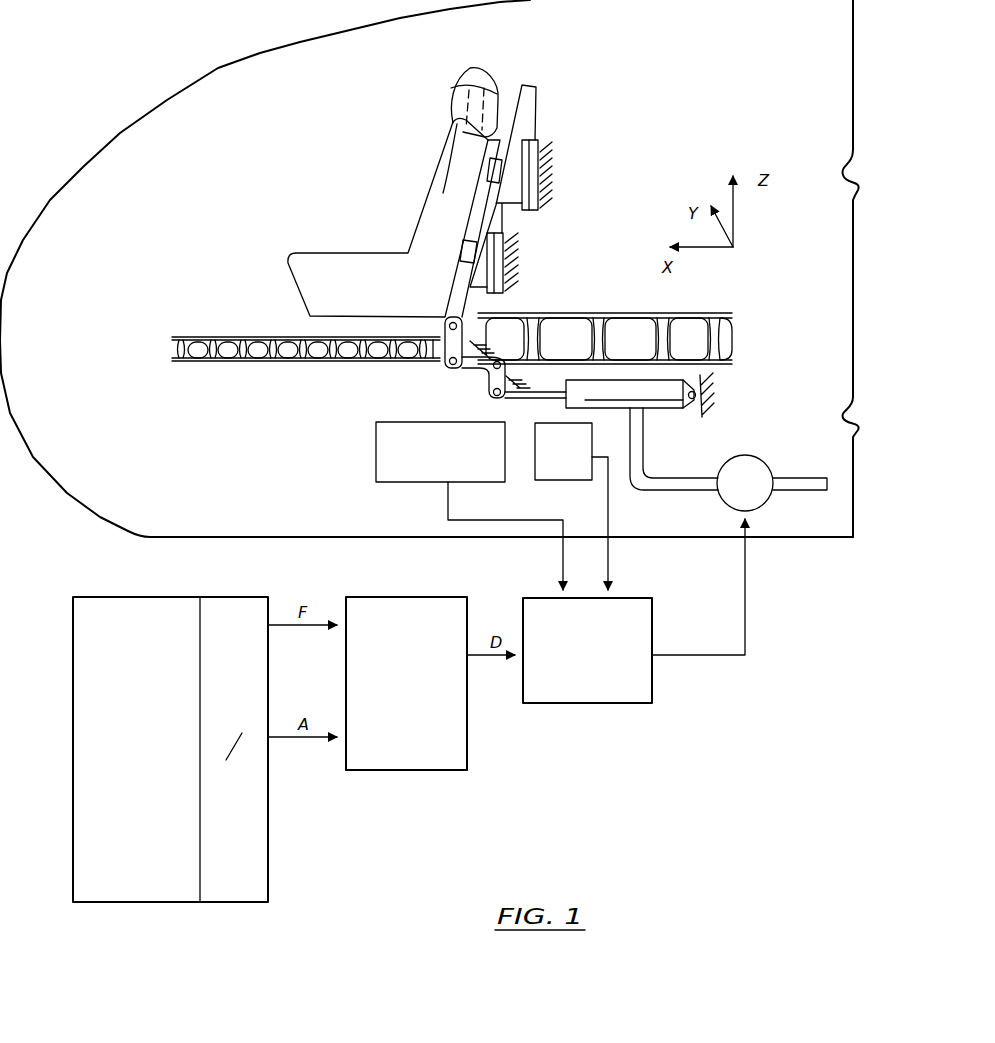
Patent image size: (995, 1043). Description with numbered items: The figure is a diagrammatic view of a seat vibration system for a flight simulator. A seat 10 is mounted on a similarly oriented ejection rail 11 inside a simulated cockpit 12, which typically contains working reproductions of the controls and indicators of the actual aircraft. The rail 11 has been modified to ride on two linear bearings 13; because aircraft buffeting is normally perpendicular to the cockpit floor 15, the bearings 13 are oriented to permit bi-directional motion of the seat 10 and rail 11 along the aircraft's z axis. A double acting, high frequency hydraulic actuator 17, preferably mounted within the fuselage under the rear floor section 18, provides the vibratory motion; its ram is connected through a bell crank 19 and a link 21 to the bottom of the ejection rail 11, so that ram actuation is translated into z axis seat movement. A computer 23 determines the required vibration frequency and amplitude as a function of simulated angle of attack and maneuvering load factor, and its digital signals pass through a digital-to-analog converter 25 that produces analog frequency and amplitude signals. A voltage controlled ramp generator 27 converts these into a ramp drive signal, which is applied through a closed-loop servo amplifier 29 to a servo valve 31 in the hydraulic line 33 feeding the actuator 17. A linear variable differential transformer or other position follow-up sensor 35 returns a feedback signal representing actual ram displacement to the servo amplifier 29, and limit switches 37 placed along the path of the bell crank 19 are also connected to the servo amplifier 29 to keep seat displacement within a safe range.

The seat 10 is at (352, 253).
The ejection rail 11 is at (534, 85).
The simulated cockpit 12 is at (218, 70).
The linear bearings 13 is at (505, 232).
The cockpit floor 15 is at (177, 335).
The hydraulic actuator 17 is at (660, 398).
The rear floor section 18 is at (722, 337).
The bell crank 19 is at (482, 372).
The link 21 is at (445, 353).
The computer 23 is at (122, 903).
The digital-to-analog converter 25 is at (250, 903).
The voltage controlled ramp generator 27 is at (432, 771).
The servo amplifier 29 is at (625, 704).
The servo valve 31 is at (745, 455).
The hydraulic line 33 is at (813, 478).
The position follow-up sensor 35 is at (565, 483).
The limit switches 37 is at (376, 463).